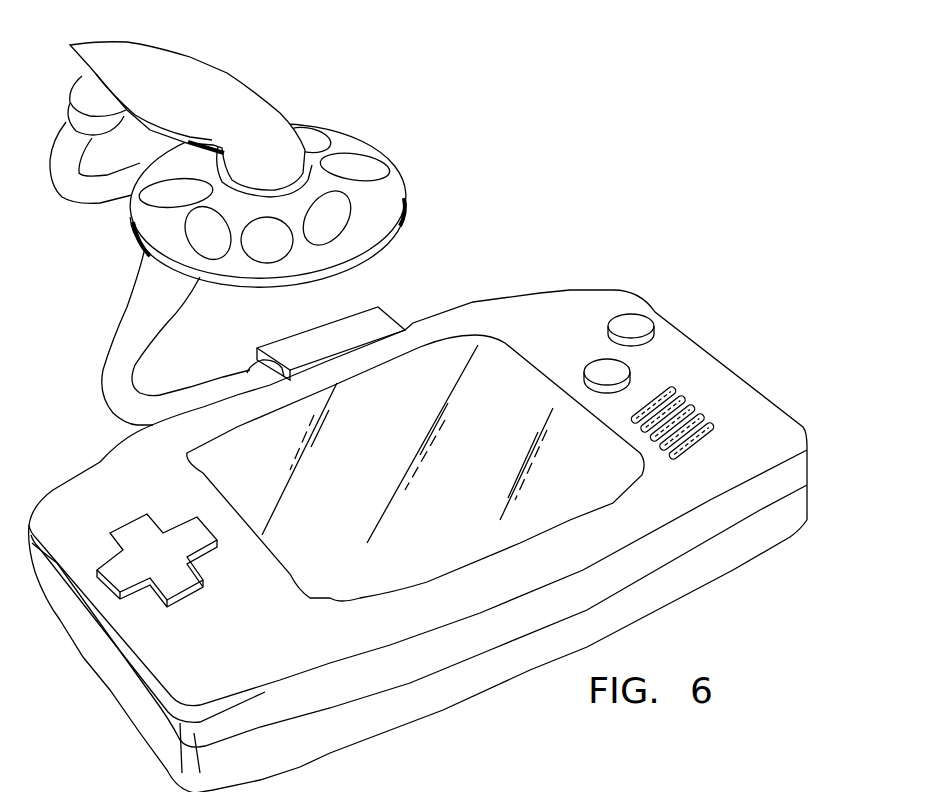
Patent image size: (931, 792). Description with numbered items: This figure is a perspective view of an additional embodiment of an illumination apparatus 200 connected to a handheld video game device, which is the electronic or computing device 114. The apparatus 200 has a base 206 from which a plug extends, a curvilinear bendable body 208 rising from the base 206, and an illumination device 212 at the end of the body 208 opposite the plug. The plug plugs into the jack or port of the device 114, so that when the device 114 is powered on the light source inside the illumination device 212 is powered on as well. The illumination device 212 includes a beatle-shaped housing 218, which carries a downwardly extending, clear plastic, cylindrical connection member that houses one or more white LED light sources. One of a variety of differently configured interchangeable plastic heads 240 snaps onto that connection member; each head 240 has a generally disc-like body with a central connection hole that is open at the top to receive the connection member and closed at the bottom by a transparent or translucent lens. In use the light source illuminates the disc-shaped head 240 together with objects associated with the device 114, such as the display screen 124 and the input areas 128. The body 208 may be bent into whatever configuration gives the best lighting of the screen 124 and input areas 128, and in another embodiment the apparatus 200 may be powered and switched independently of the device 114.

The electronic or computing device 114 is at (777, 345).
The display screen 124 is at (490, 309).
The input area 128 is at (662, 354).
The illumination apparatus 200 is at (341, 80).
The base 206 is at (368, 320).
The curvilinear bendable body 208 is at (125, 343).
The illumination device 212 is at (189, 104).
The beatle-shaped housing 218 is at (135, 62).
The interchangeable head 240 is at (404, 149).